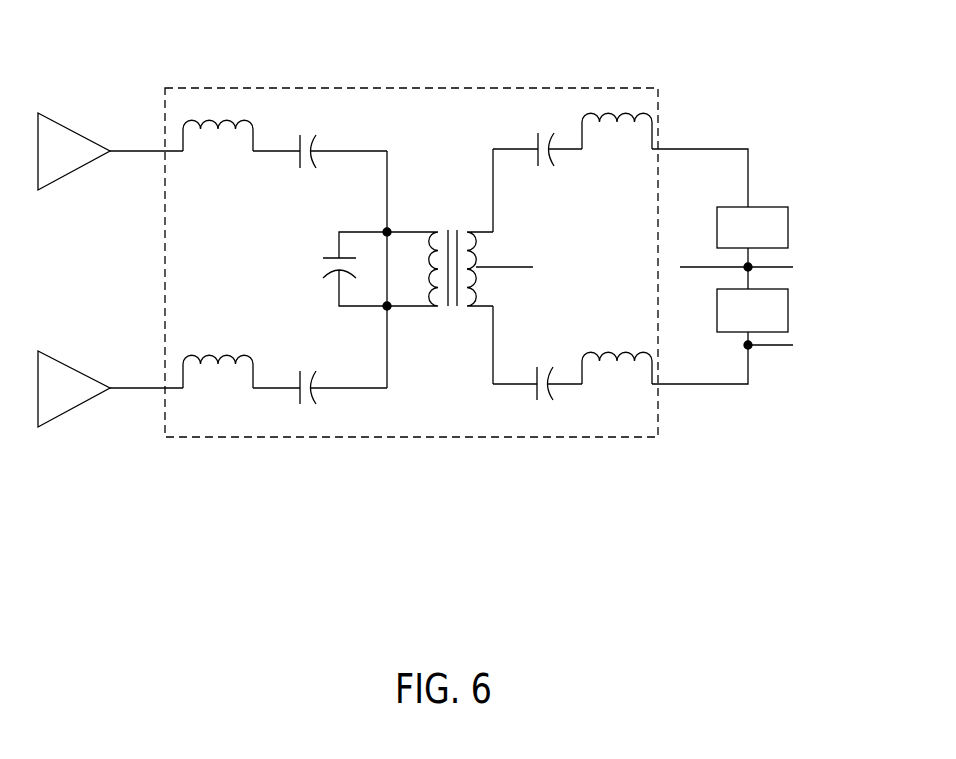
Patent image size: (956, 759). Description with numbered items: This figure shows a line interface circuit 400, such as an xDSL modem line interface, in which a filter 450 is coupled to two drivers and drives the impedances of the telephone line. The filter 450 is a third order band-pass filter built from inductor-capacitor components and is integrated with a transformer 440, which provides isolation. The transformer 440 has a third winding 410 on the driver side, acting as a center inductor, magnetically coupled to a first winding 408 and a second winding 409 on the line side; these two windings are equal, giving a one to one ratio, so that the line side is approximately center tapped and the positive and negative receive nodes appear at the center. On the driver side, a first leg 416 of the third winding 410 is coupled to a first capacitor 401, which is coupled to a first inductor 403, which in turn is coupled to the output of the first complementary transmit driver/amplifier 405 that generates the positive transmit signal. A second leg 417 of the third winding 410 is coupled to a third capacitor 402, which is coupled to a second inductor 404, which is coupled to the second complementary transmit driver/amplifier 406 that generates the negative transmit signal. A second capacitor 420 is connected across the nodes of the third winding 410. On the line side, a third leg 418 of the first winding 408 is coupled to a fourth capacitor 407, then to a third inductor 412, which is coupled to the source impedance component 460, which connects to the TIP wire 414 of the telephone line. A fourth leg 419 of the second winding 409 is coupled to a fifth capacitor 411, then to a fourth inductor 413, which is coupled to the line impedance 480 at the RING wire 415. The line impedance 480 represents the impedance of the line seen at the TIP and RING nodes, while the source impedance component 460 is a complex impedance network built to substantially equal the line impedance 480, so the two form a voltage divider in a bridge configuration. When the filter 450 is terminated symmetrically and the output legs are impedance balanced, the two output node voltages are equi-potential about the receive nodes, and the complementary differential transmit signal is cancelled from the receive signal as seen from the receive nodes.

The line interface circuit 400 is at (162, 518).
The first capacitor 401 is at (308, 139).
The third capacitor 402 is at (308, 399).
The first inductor 403 is at (218, 124).
The second inductor 404 is at (218, 380).
The first complementary transmit driver/amplifier 405 is at (74, 149).
The second complementary transmit driver/amplifier 406 is at (74, 384).
The fourth capacitor 407 is at (546, 136).
The first winding 408 is at (489, 250).
The second winding 409 is at (489, 287).
The third winding 410 is at (412, 269).
The fifth capacitor 411 is at (544, 397).
The third inductor 412 is at (617, 120).
The fourth inductor 413 is at (617, 375).
The TIP wire 414 is at (804, 269).
The RING wire 415 is at (812, 346).
The first leg 416 is at (375, 179).
The second leg 417 is at (368, 356).
The third leg 418 is at (508, 179).
The fourth leg 419 is at (498, 357).
The second capacitor 420 is at (337, 269).
The transformer 440 is at (460, 240).
The filter 450 is at (655, 82).
The impedance component Zsrc 460 is at (755, 216).
The line impedance Zline 480 is at (773, 310).